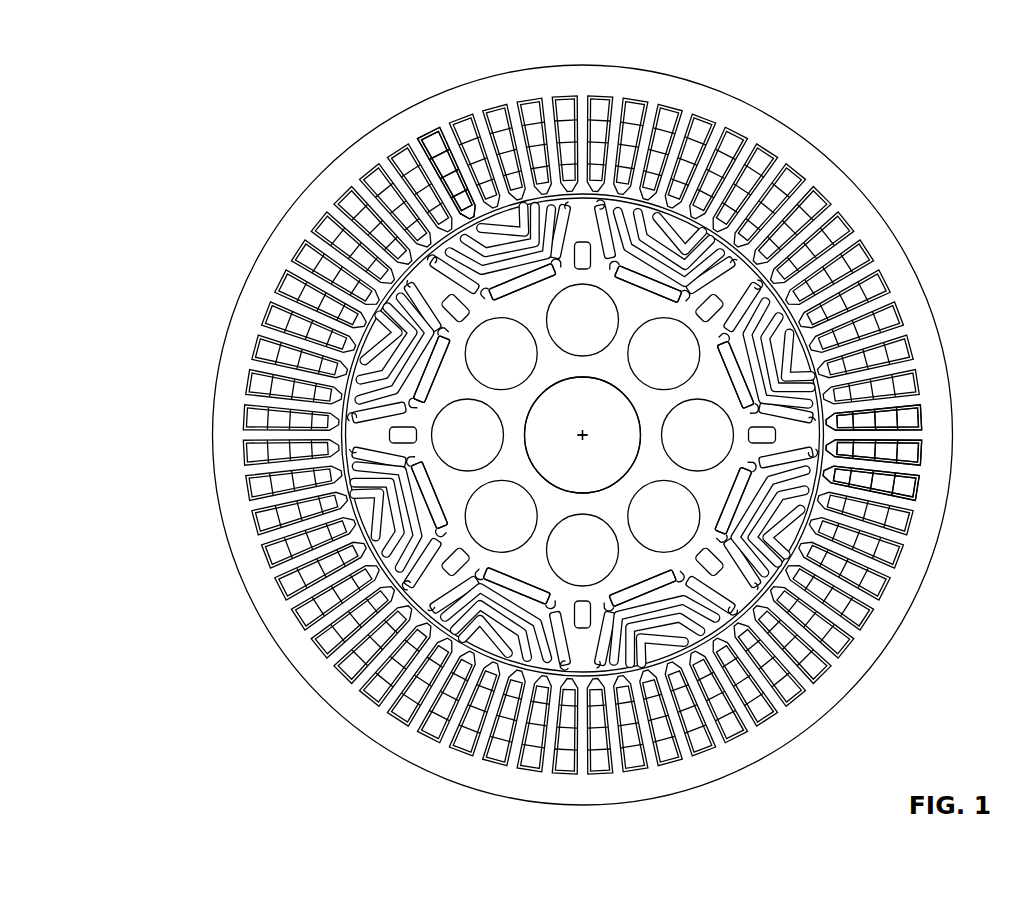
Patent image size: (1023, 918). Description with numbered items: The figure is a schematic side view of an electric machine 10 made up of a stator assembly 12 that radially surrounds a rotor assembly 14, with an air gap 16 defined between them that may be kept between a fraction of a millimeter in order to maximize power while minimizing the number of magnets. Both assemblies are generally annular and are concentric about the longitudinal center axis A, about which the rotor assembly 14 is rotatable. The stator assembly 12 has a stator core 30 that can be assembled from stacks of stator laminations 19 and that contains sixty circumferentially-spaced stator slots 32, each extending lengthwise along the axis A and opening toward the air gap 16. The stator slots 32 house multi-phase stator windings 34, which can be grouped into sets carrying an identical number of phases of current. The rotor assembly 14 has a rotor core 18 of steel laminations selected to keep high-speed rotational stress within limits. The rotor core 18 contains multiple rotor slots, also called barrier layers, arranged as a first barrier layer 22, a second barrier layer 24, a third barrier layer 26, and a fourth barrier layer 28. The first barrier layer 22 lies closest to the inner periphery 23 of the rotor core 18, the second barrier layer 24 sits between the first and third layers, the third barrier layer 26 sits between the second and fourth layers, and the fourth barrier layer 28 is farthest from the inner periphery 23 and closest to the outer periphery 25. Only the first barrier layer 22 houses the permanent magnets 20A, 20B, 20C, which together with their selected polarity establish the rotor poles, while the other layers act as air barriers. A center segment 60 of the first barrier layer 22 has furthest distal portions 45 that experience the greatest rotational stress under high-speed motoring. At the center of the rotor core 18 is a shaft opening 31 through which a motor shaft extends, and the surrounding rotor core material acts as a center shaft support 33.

The electric machine 10 is at (950, 126).
The stator assembly 12 is at (941, 322).
The rotor assembly 14 is at (343, 433).
The air gap 16 is at (596, 172).
The rotor core 18 is at (443, 386).
The stator laminations 19 is at (905, 252).
The permanent magnet 20A is at (540, 588).
The permanent magnet 20B is at (558, 700).
The permanent magnet 20C is at (440, 680).
The first barrier layer 22 is at (410, 575).
The inner periphery 23 is at (584, 433).
The second barrier layer 24 is at (398, 525).
The outer periphery 25 is at (472, 217).
The third barrier layer 26 is at (400, 548).
The fourth barrier layer 28 is at (388, 482).
The stator core 30 is at (926, 498).
The shaft opening 31 is at (582, 434).
The stator slots 32 is at (917, 457).
The center shaft support 33 is at (566, 450).
The stator windings 34 is at (895, 492).
The distal portion 45 is at (447, 537).
The center segment 60 is at (352, 457).
The center axis A is at (588, 437).